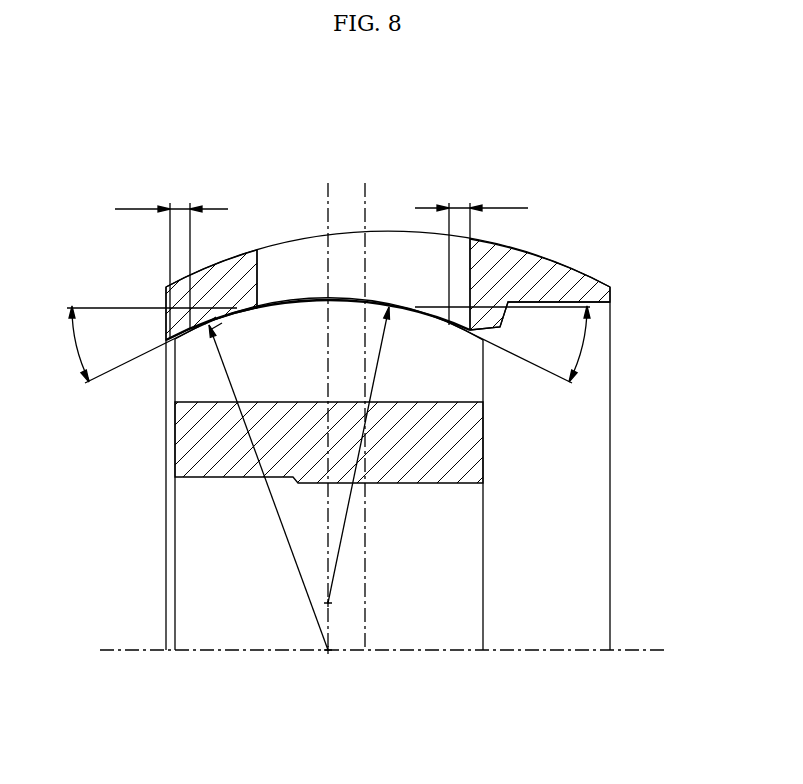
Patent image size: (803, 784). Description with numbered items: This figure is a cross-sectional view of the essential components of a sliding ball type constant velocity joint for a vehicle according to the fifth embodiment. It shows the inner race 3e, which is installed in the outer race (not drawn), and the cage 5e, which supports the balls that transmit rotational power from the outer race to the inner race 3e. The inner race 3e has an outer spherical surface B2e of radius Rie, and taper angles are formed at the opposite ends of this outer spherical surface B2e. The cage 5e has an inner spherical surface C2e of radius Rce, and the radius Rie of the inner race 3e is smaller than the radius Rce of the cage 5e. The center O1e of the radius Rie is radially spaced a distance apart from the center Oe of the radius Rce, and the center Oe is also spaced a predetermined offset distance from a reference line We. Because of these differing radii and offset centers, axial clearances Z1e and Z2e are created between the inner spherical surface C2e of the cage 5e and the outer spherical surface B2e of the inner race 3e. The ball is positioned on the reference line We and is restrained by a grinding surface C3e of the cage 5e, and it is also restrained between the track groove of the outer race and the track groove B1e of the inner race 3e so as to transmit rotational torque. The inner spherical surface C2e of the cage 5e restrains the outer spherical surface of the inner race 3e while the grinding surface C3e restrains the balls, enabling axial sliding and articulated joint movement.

The cage 5e is at (558, 273).
The inner race 3e is at (183, 440).
The track groove of the inner race B1e is at (312, 401).
The outer spherical surface of the inner race B2e is at (219, 321).
The reference line We is at (365, 203).
The axial clearance Z1e is at (171, 262).
The axial clearance Z2e is at (471, 256).
The inner spherical surface of the cage C2e is at (211, 321).
The grinding surface of the cage C3e is at (215, 325).
The radius of the inner spherical surface of the cage Rce is at (268, 487).
The radius of the outer spherical surface of the inner race Rie is at (359, 455).
The center of the radius Rce Oe is at (328, 650).
The center of the radius Rie O1e is at (328, 603).